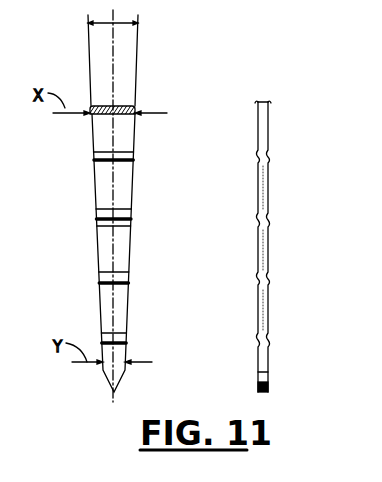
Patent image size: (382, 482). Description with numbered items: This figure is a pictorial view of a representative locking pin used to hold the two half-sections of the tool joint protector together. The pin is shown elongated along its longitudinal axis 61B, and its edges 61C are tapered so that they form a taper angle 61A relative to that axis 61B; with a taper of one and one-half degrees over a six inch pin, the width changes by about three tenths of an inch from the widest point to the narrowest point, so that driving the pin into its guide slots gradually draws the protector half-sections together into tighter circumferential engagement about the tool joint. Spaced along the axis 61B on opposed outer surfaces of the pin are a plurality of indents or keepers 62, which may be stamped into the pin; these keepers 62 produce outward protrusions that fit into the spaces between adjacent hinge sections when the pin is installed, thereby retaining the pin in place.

The taper angle 61A is at (99, 24).
The longitudinal axis 61B is at (114, 80).
The tapered edges 61C is at (92, 190).
The indents (keepers) 62 is at (268, 168).